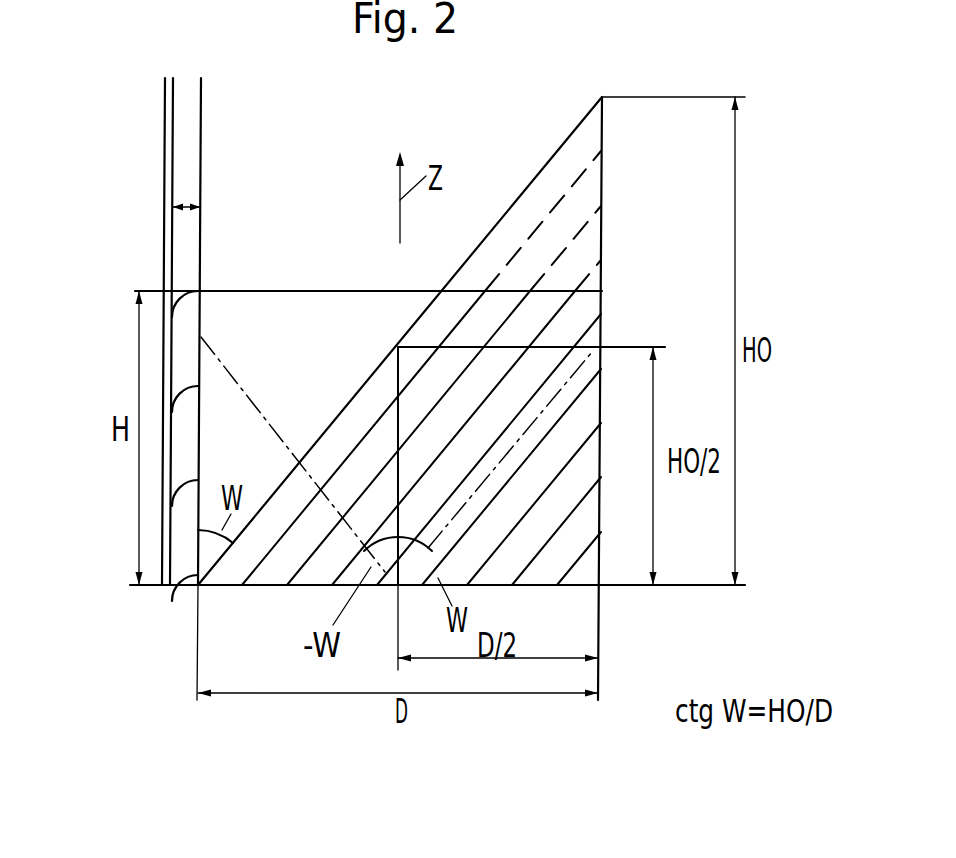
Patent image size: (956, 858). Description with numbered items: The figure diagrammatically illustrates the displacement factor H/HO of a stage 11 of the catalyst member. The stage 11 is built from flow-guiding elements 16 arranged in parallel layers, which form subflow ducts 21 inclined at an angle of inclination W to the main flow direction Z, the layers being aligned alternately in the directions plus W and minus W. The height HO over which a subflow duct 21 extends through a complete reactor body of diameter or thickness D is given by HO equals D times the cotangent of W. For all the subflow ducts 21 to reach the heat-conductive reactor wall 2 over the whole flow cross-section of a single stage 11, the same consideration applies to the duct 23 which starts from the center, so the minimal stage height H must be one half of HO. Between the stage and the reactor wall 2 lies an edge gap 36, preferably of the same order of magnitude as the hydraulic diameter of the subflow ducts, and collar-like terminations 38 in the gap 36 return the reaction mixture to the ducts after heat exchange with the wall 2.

The reactor wall 2 is at (172, 122).
The edge gap 36 is at (186, 208).
The collar-like termination 38 is at (199, 387).
The stage 11 is at (214, 455).
The subflow duct 21 is at (227, 565).
The duct starting from the center 23 is at (421, 603).
The flow-guiding element 16 is at (525, 510).